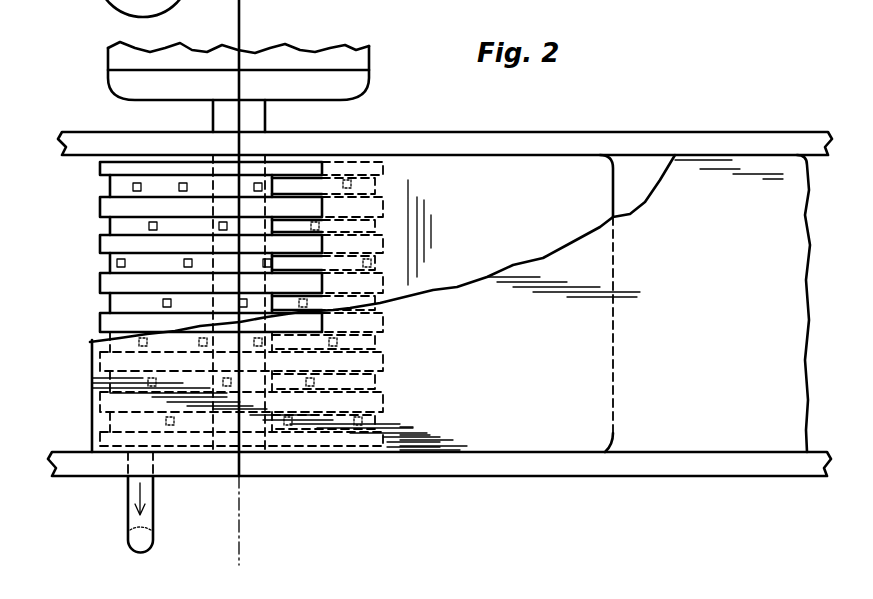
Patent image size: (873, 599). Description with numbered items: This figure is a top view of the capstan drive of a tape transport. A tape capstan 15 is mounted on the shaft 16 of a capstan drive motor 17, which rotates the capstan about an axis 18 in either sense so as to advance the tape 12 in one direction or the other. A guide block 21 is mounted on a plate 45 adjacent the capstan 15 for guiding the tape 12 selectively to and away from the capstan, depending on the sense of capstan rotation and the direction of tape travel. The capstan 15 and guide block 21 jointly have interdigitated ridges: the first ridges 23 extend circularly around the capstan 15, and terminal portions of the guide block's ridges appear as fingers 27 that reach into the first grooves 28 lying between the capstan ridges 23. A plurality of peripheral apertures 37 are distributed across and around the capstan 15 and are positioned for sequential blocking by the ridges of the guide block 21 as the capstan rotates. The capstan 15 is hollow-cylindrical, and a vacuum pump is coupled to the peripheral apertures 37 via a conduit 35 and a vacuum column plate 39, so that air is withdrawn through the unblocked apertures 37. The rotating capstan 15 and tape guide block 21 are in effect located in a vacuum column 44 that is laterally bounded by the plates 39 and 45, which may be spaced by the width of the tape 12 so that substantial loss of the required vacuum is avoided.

The tape 12 is at (705, 338).
The tape capstan 15 is at (100, 245).
The shaft 16 is at (267, 117).
The capstan drive motor 17 is at (321, 53).
The axis 18 is at (243, 510).
The guide block 21 is at (505, 234).
The first ridges 23 is at (100, 318).
The fingers 27 is at (305, 186).
The first grooves 28 is at (107, 182).
The conduit 35 is at (127, 527).
The peripheral apertures 37 is at (183, 182).
The vacuum column plate 39 is at (118, 470).
The vacuum column 44 is at (70, 375).
The plate 45 is at (96, 132).